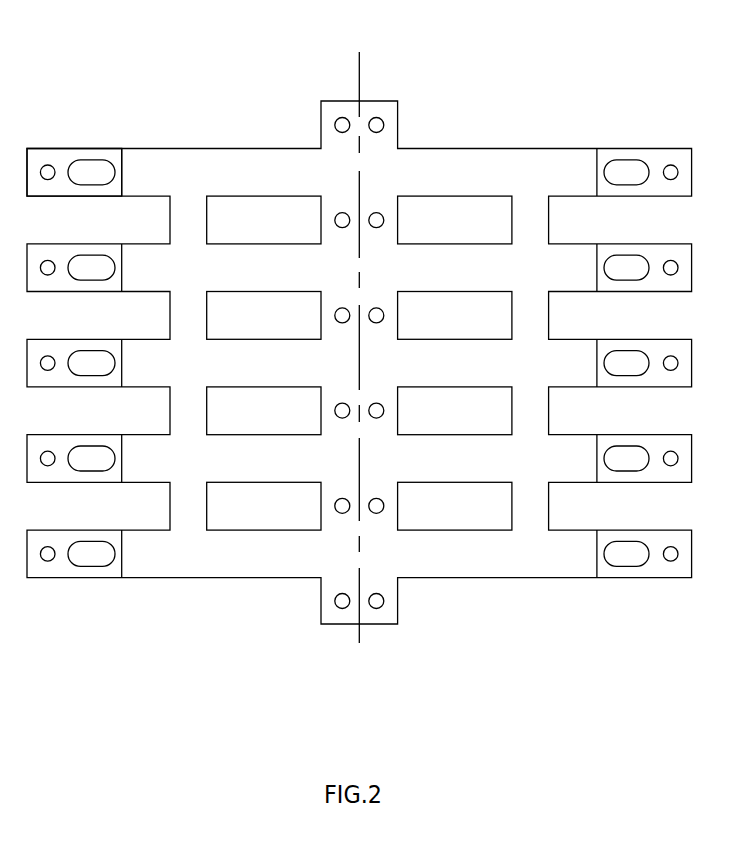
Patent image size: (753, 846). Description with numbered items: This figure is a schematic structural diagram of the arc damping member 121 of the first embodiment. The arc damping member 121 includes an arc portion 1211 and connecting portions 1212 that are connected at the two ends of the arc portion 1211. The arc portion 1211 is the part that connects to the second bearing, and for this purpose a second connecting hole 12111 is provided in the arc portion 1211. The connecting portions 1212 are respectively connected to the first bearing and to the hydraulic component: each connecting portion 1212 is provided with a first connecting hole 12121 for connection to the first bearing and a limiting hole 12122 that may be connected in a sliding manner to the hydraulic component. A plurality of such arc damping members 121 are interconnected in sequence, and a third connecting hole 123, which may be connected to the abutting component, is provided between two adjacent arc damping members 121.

The arc damping member 121 is at (390, 30).
The arc portion 1211 is at (423, 167).
The connecting portion 1212 is at (64, 158).
The first connecting hole 12121 is at (667, 168).
The limiting hole 12122 is at (623, 555).
The third connecting hole 123 is at (221, 517).
The second connecting hole 12111 is at (338, 510).